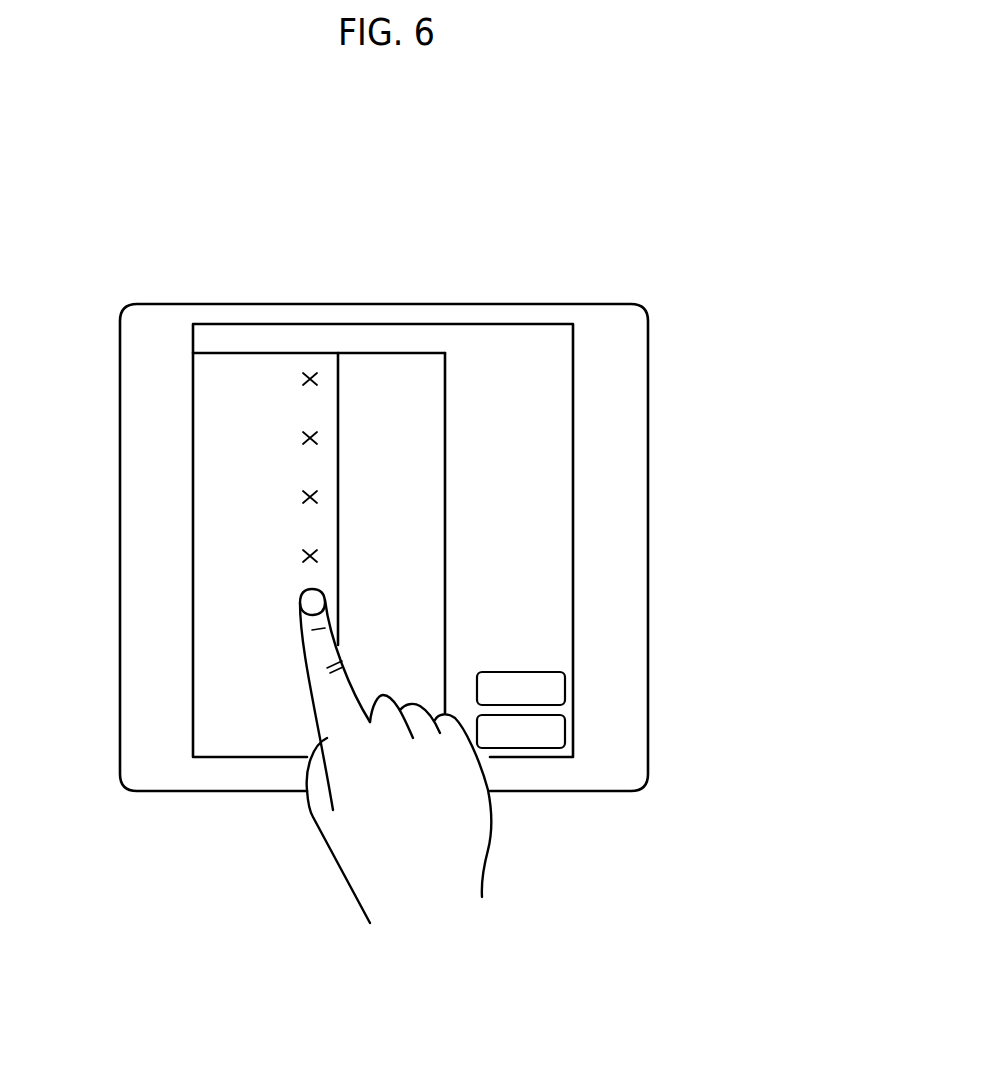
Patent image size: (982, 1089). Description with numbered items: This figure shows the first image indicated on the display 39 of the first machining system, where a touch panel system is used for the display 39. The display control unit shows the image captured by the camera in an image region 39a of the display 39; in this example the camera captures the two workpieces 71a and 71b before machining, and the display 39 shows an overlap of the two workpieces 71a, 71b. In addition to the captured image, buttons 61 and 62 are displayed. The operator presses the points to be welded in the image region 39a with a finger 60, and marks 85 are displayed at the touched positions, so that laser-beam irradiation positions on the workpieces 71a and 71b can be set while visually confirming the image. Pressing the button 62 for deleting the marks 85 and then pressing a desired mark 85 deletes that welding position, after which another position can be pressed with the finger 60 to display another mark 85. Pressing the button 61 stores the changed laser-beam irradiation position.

The display 39 is at (587, 248).
The image region 39a is at (554, 364).
The workpiece 71a is at (413, 375).
The workpiece 71b is at (230, 370).
The mark 85 is at (301, 379).
The finger 60 is at (323, 683).
The button 61 is at (565, 728).
The button 62 is at (565, 683).